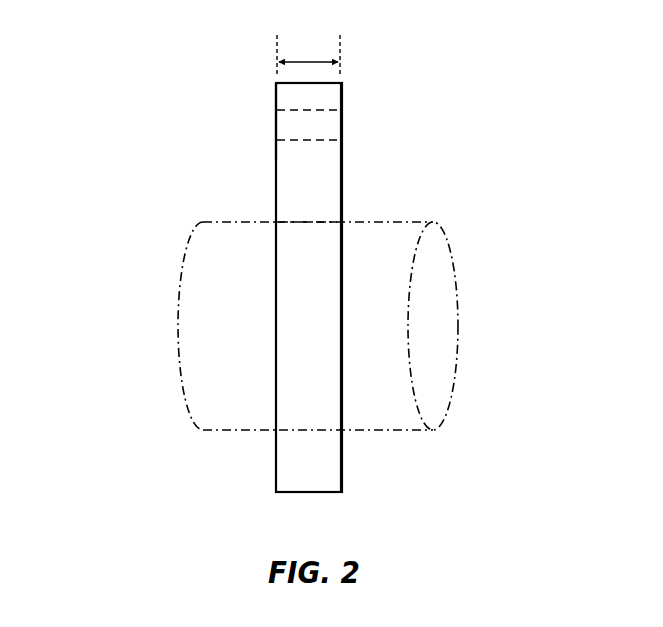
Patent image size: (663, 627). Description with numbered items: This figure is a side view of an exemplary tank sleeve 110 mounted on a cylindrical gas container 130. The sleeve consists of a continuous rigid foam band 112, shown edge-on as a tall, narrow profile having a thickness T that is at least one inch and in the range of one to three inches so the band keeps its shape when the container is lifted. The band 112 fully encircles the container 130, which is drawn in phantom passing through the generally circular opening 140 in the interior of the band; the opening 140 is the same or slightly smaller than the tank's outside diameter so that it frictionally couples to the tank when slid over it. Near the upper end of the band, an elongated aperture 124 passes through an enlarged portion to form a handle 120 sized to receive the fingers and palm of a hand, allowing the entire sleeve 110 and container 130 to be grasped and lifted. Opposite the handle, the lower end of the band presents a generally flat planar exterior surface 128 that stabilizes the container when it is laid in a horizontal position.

The tank sleeve 110 is at (394, 121).
The band 112 is at (322, 185).
The handle 120 is at (251, 127).
The aperture 124 is at (275, 107).
The planar exterior surface 128 is at (342, 492).
The cylindrical gas container 130 is at (453, 248).
The opening 140 is at (298, 219).